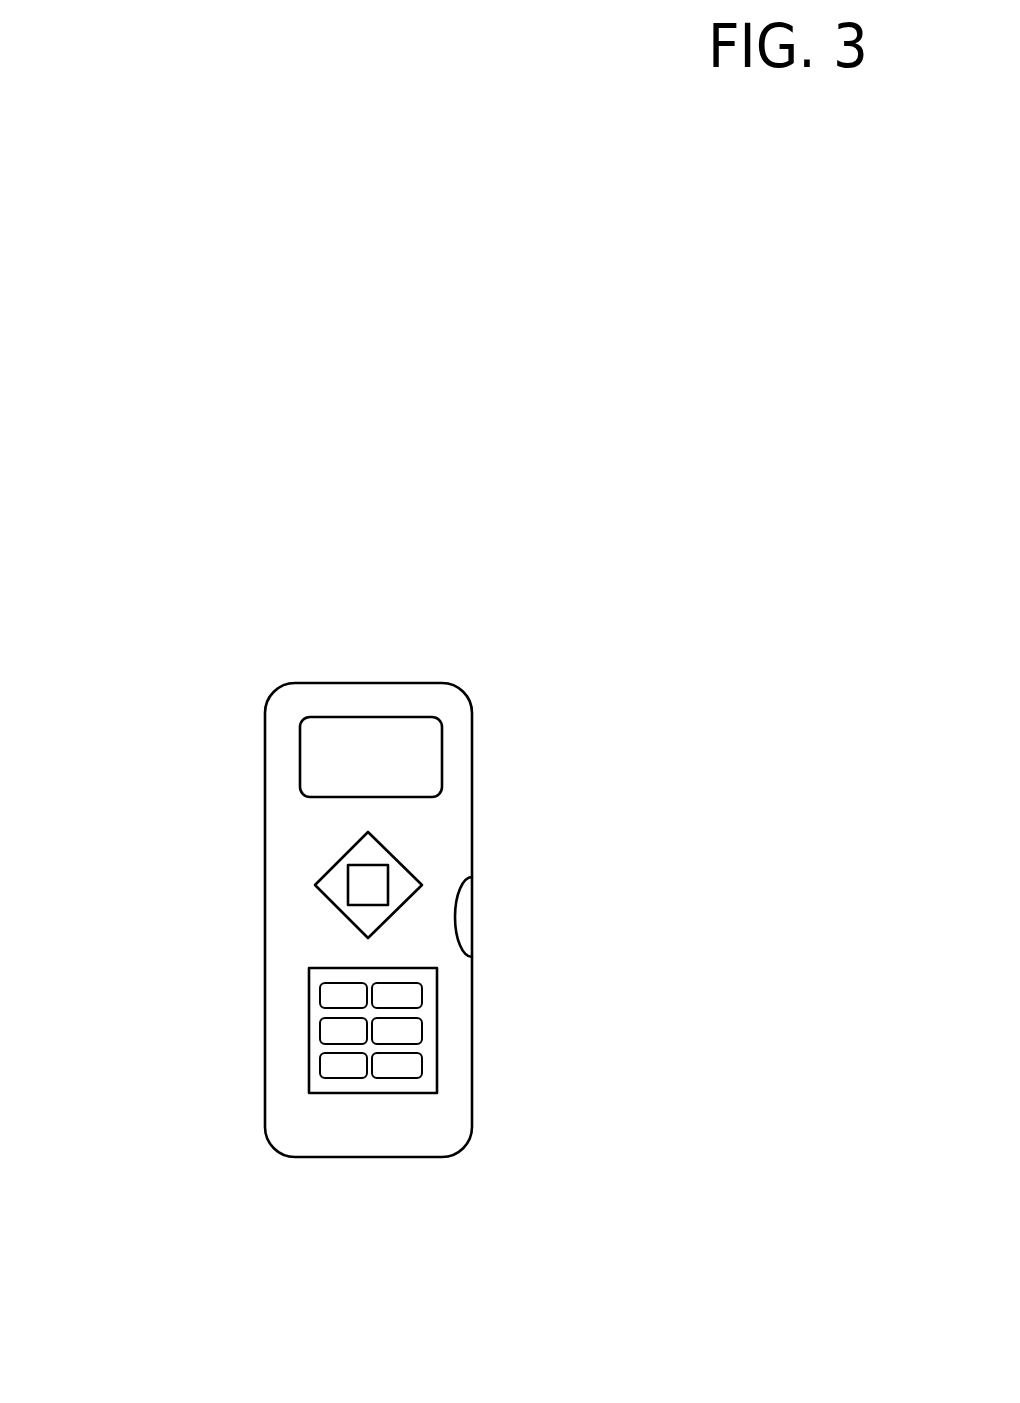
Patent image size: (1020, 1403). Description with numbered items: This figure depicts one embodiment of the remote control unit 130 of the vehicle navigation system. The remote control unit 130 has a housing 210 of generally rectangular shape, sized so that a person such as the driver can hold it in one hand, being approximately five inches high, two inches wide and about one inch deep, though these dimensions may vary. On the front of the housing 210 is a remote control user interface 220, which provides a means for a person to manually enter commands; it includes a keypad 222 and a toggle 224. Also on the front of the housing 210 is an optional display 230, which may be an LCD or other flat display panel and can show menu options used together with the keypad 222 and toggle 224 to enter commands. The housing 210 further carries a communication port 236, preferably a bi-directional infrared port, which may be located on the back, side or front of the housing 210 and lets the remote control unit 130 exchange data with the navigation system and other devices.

The remote control unit 130 is at (502, 710).
The display 230 is at (375, 757).
The housing 210 is at (307, 831).
The toggle 224 is at (420, 862).
The remote control user interface 220 is at (305, 1035).
The keypad 222 is at (369, 1093).
The communication port 236 is at (472, 908).